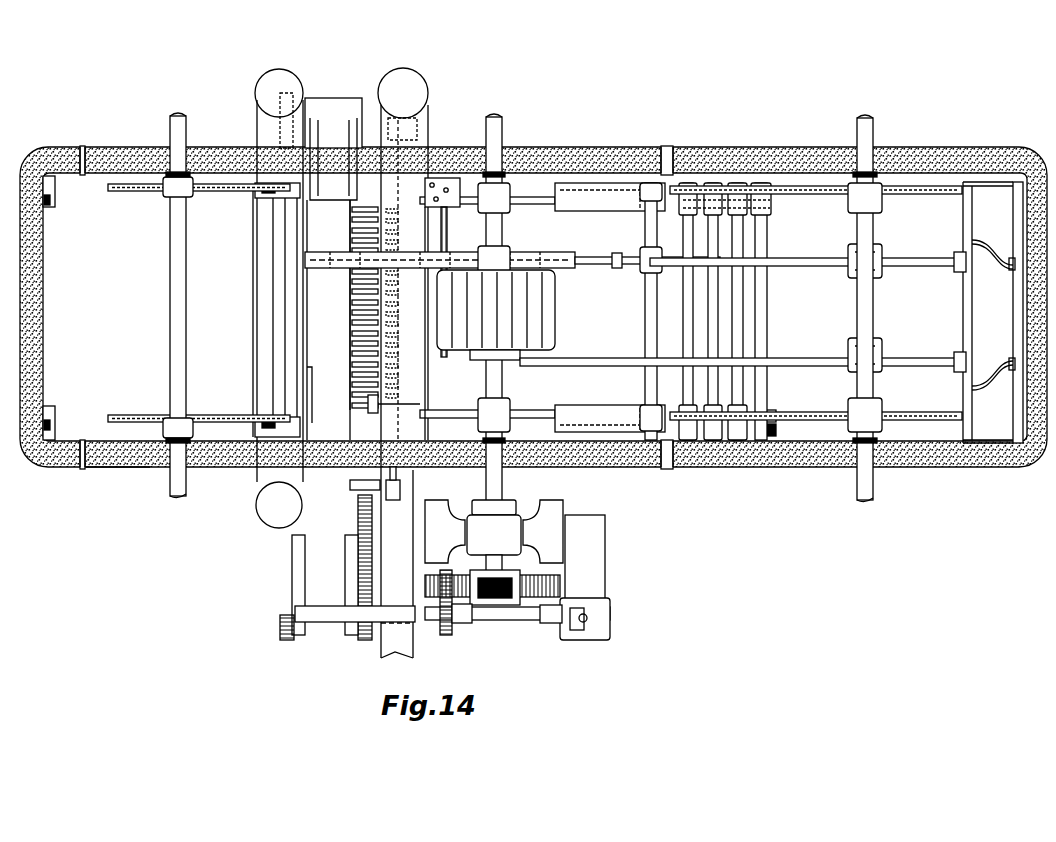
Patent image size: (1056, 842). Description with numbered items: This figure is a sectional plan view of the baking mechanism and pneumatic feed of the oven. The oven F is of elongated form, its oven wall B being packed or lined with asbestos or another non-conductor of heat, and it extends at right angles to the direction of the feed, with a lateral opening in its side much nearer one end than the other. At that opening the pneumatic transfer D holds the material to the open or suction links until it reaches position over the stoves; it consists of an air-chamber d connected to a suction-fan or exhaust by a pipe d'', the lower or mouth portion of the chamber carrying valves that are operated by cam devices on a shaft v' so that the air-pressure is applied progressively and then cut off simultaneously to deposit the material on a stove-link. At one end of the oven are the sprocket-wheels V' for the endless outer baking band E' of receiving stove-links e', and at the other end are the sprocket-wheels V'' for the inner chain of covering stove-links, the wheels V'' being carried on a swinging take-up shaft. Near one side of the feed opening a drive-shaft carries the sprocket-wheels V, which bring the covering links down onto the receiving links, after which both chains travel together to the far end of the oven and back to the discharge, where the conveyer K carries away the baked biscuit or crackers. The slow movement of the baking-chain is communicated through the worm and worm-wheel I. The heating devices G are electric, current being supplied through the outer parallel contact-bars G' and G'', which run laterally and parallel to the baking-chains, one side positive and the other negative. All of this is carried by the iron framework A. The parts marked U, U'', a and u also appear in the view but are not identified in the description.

The oven F is at (533, 323).
The oven wall B is at (118, 480).
The pipe d'' is at (293, 296).
The pneumatic transfer D is at (333, 269).
The air-chamber d is at (320, 389).
The rack U is at (382, 305).
The rack column U'' is at (420, 363).
The receiving stove-links e' is at (512, 311).
The outer baking band E' is at (521, 310).
The sprocket-wheels V' is at (199, 305).
The shaft v' is at (386, 413).
The main shaft a is at (500, 310).
The sprocket-wheels V is at (542, 307).
The heating devices G is at (512, 303).
The outer contact-bar G' is at (808, 257).
The outer contact-bar G'' is at (743, 354).
The sprocket-wheels V'' is at (816, 308).
The framework A is at (562, 508).
The worm and worm-wheel I is at (510, 600).
The conveyer K is at (347, 560).
The pin bracket u is at (402, 485).